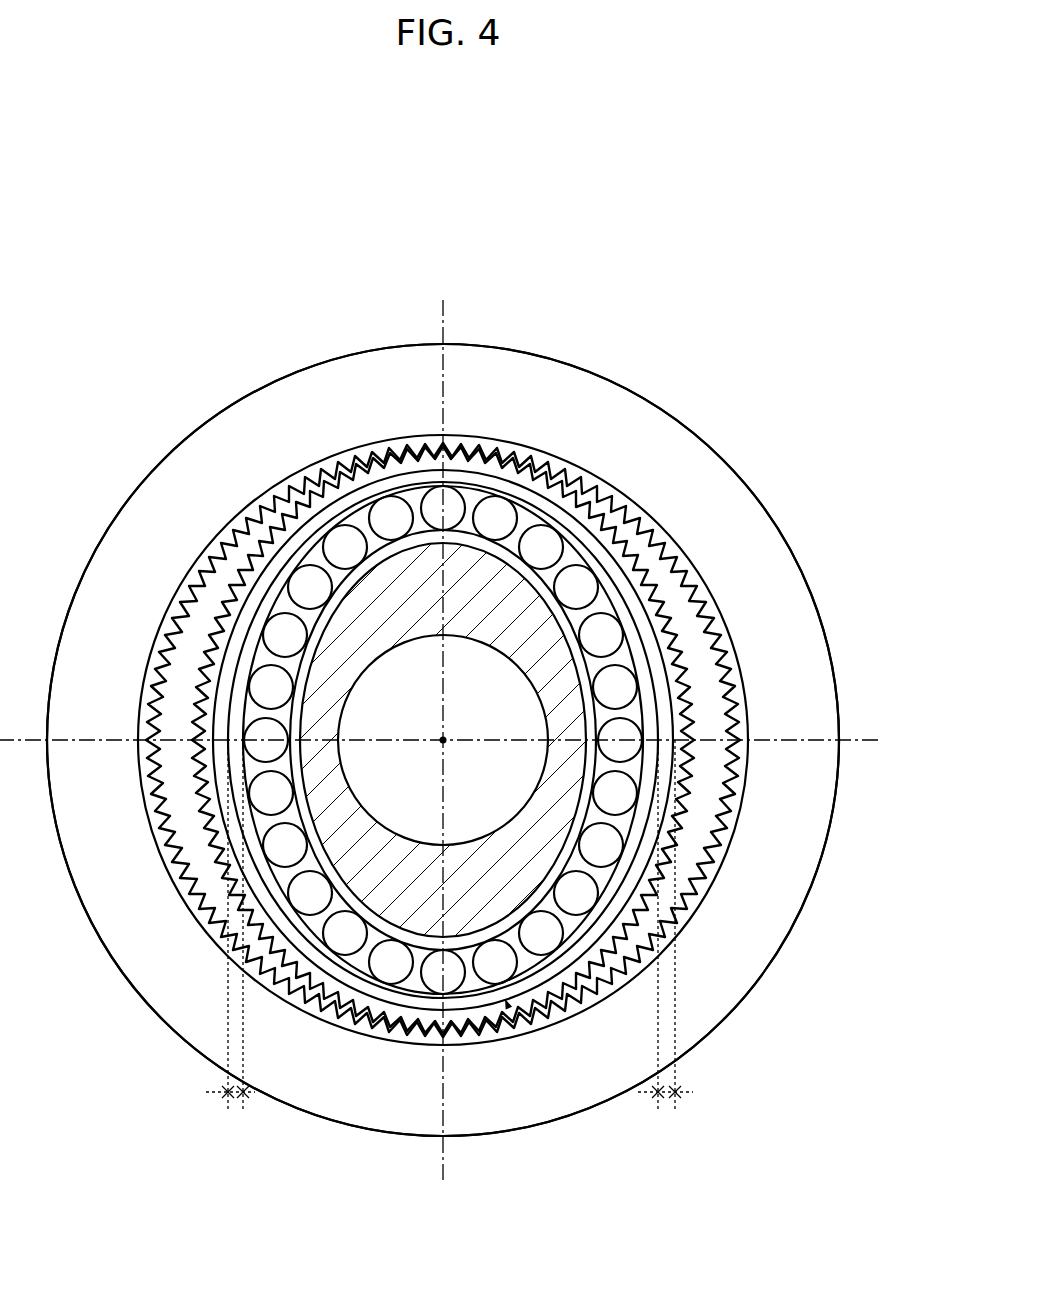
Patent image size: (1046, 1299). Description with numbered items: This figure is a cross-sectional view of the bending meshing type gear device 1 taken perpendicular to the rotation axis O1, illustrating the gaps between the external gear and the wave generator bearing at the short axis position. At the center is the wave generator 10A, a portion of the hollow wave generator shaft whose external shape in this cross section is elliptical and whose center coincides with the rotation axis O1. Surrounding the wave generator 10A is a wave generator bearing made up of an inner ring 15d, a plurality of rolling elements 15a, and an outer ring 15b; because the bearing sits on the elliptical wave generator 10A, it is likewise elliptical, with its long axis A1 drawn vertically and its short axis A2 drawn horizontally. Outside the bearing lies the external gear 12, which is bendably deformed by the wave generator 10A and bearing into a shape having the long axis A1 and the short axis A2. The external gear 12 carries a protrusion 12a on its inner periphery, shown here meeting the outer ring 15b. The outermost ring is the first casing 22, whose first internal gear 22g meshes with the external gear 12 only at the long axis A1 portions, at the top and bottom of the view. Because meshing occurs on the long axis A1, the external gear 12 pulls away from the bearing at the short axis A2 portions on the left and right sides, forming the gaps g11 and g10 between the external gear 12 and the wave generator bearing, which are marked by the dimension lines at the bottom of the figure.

The bending meshing type gear device 1 is at (610, 316).
The external gear 12 is at (509, 651).
The protrusion 12a is at (684, 660).
The first casing 22 is at (443, 740).
The first internal gear 22g is at (613, 488).
The rolling elements 15a is at (303, 587).
The outer ring 15b is at (320, 533).
The inner ring 15d is at (313, 643).
The wave generator 10A is at (507, 1000).
The gap g10 is at (675, 1100).
The gap g11 is at (237, 1097).
The long axis A1 is at (443, 724).
The short axis A2 is at (461, 743).
The rotation axis O1 is at (464, 758).